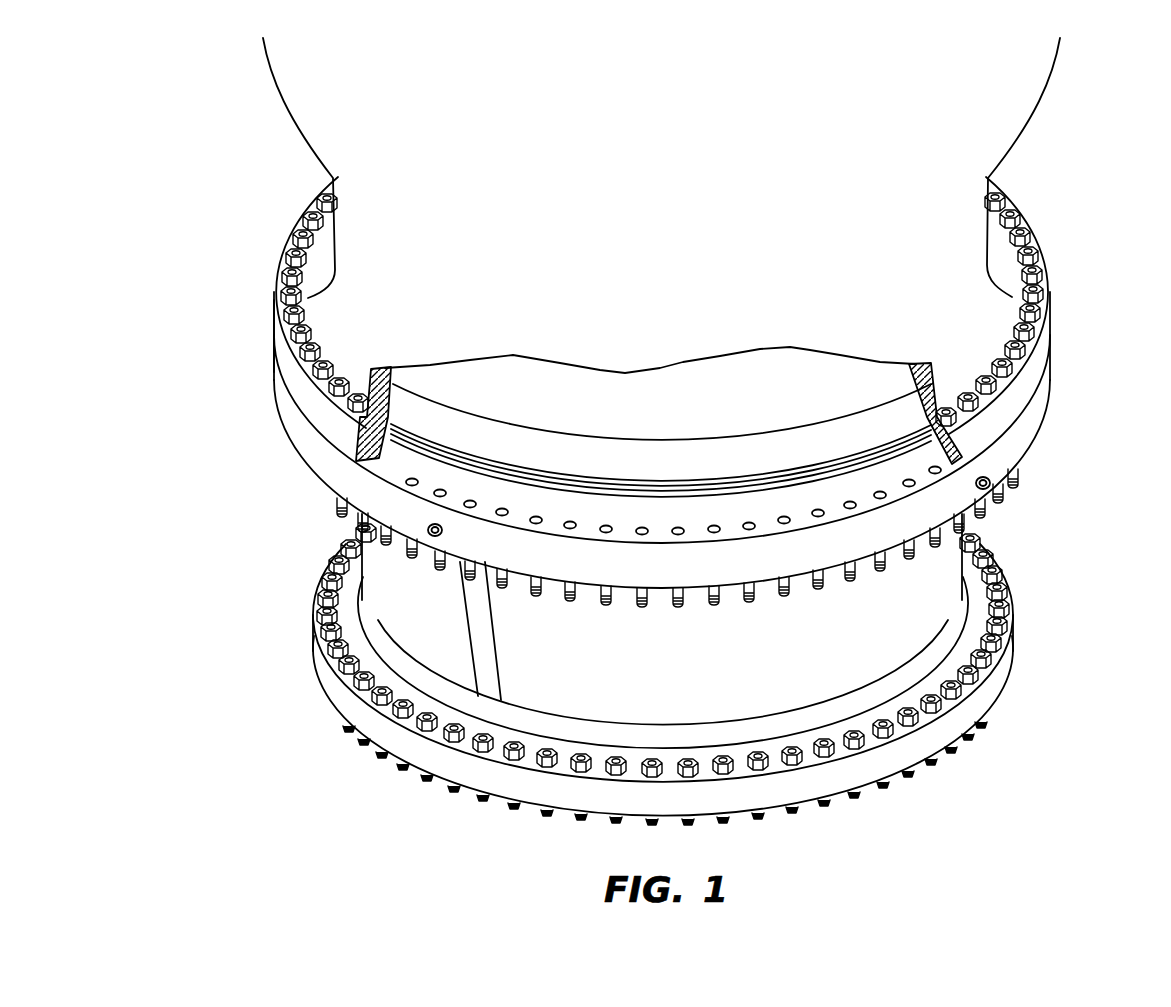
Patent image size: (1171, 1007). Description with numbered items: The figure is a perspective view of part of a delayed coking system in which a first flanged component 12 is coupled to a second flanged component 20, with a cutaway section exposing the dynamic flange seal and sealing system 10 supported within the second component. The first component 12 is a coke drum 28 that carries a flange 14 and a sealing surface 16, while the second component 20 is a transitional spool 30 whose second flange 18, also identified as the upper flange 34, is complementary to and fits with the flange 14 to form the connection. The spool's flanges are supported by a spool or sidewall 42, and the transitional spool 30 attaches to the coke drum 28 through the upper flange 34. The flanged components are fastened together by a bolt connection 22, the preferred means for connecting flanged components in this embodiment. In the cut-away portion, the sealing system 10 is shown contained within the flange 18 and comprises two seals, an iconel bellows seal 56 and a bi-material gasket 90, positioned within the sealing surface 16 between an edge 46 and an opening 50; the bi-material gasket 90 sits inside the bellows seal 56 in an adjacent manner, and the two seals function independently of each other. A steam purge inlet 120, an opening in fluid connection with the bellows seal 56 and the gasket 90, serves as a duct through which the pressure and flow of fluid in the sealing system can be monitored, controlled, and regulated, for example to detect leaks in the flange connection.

The dynamic flange seal and sealing system 10 is at (392, 460).
The first flanged component 12 is at (1037, 107).
The flange 14 is at (1047, 348).
The sealing surface 16 is at (429, 417).
The second flange 18 is at (1040, 407).
The second flanged component 20 is at (283, 417).
The bolt connection 22 is at (1033, 223).
The coke drum 28 is at (270, 82).
The transitional spool 30 is at (957, 543).
The upper flange 34 is at (1027, 440).
The sidewall 42 is at (906, 617).
The edge 46 is at (960, 622).
The opening 50 is at (856, 397).
The iconel bellows seal 56 is at (357, 515).
The bi-material gasket 90 is at (497, 457).
The steam purge inlet 120 is at (435, 538).